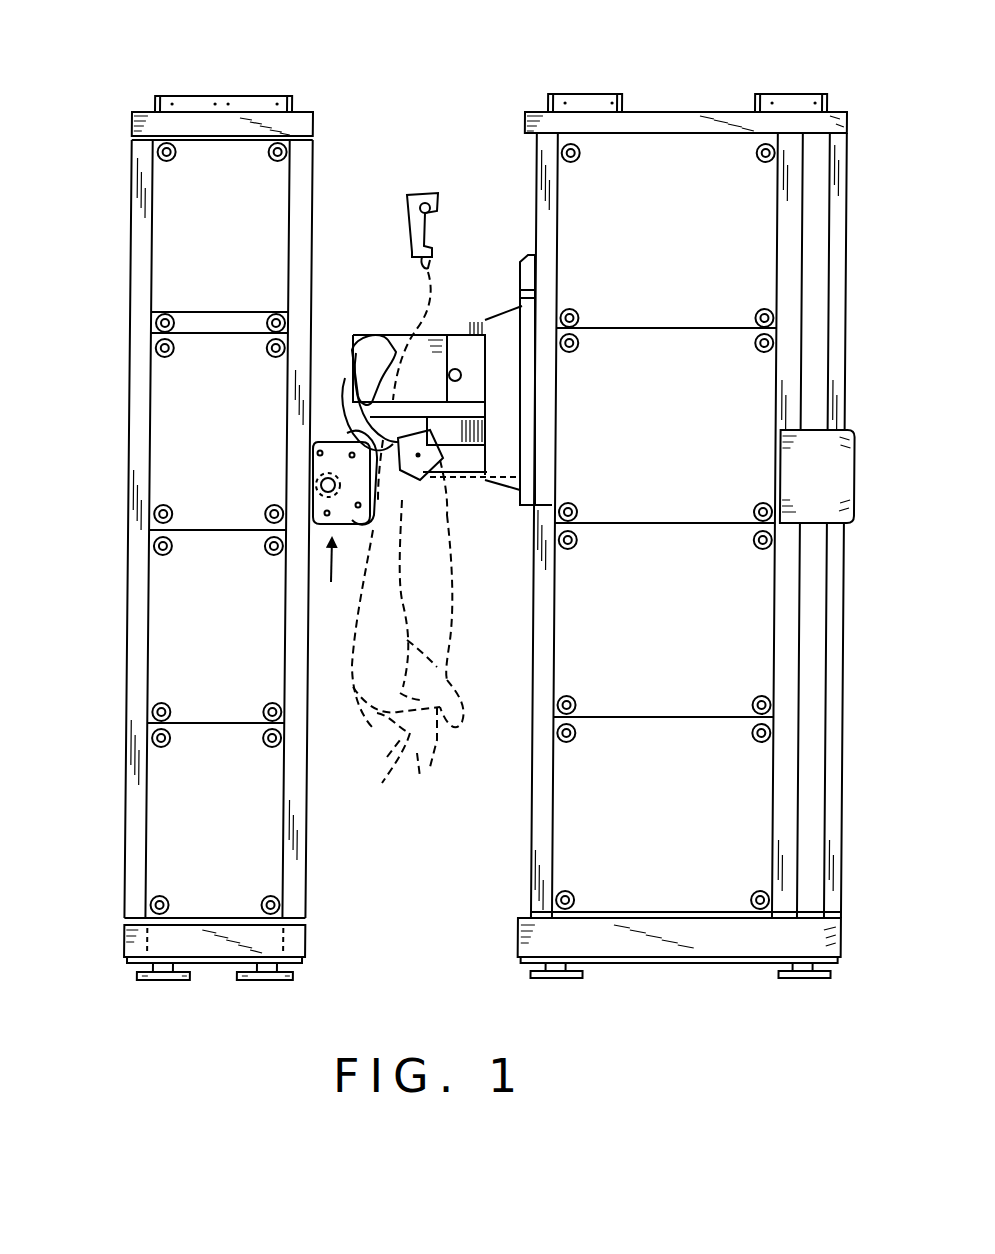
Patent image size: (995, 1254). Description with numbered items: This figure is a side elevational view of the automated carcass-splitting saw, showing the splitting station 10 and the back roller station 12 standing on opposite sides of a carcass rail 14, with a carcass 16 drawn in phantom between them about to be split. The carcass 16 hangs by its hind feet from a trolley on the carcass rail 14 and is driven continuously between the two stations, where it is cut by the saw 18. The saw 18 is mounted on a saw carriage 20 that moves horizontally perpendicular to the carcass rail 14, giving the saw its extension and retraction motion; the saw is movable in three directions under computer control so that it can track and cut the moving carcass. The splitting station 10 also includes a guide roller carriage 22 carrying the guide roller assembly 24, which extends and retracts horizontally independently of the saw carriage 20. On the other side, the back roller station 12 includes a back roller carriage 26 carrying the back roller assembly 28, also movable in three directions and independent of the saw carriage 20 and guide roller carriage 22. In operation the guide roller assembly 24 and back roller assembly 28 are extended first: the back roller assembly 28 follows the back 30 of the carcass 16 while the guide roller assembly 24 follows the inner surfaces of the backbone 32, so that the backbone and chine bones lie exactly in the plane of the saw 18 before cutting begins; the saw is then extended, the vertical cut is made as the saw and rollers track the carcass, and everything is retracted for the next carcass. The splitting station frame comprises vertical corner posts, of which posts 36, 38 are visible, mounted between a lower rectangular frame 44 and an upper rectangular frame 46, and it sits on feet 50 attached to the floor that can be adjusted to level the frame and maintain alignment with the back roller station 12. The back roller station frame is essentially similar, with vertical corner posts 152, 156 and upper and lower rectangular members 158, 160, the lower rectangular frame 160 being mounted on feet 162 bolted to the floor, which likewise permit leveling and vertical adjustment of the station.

The splitting station 10 is at (695, 516).
The back roller station 12 is at (219, 528).
The carcass rail 14 is at (428, 196).
The carcass 16 is at (408, 546).
The saw 18 is at (345, 385).
The saw carriage 20 is at (462, 347).
The guide roller carriage 22 is at (462, 478).
The guide roller assembly 24 is at (427, 480).
The back roller carriage 26 is at (334, 575).
The back roller assembly 28 is at (340, 466).
The back 30 is at (350, 680).
The backbone 32 is at (405, 607).
The vertical corner post 36 is at (544, 833).
The vertical corner post 38 is at (838, 859).
The lower rectangular frame 44 is at (822, 942).
The upper rectangular frame 46 is at (832, 123).
The feet 50 is at (580, 980).
The vertical corner post 152 is at (302, 860).
The vertical corner post 156 is at (148, 198).
The upper rectangular member 158 is at (192, 125).
The lower rectangular frame 160 is at (173, 943).
The feet 162 is at (174, 990).